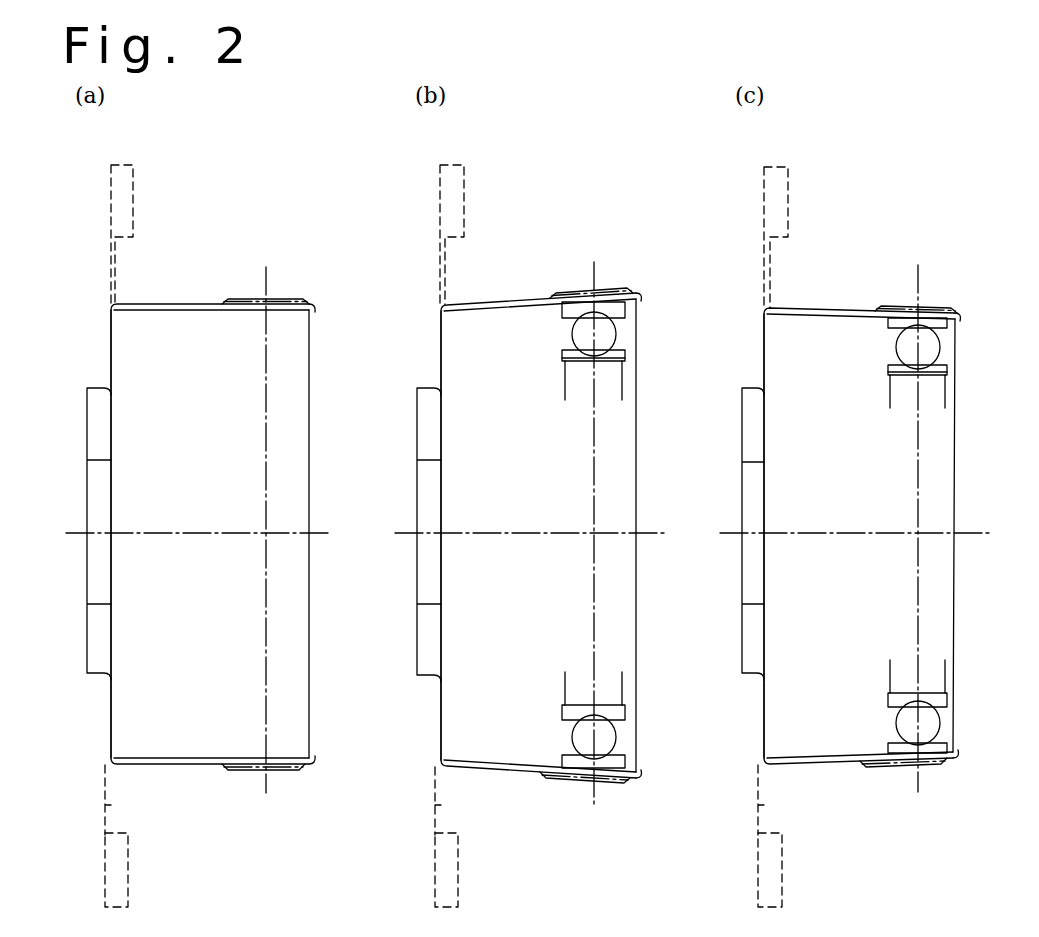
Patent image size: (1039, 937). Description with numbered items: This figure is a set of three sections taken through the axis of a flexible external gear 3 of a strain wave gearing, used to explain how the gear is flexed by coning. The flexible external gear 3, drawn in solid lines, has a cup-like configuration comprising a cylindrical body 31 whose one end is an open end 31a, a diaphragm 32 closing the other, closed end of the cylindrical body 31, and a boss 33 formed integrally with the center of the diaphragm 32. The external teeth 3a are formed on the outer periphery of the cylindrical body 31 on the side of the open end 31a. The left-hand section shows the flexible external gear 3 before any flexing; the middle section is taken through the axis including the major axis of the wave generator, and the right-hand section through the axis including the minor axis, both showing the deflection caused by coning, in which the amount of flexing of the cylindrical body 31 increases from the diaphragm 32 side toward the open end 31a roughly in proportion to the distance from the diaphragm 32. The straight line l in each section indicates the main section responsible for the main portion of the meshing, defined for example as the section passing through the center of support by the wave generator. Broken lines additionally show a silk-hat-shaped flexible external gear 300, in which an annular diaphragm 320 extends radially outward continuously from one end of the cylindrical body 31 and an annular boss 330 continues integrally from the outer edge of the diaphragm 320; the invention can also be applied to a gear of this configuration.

The flexible external gear 3 is at (529, 475).
The external teeth 3a is at (883, 205).
The cylindrical body 31 is at (174, 304).
The open end 31a is at (313, 311).
The diaphragm 32 is at (110, 346).
The boss 33 is at (87, 413).
The straight line l is at (268, 268).
The silk-hat-shaped flexible external gear 300 is at (137, 179).
The annular diaphragm 320 is at (111, 805).
The annular boss 330 is at (117, 872).